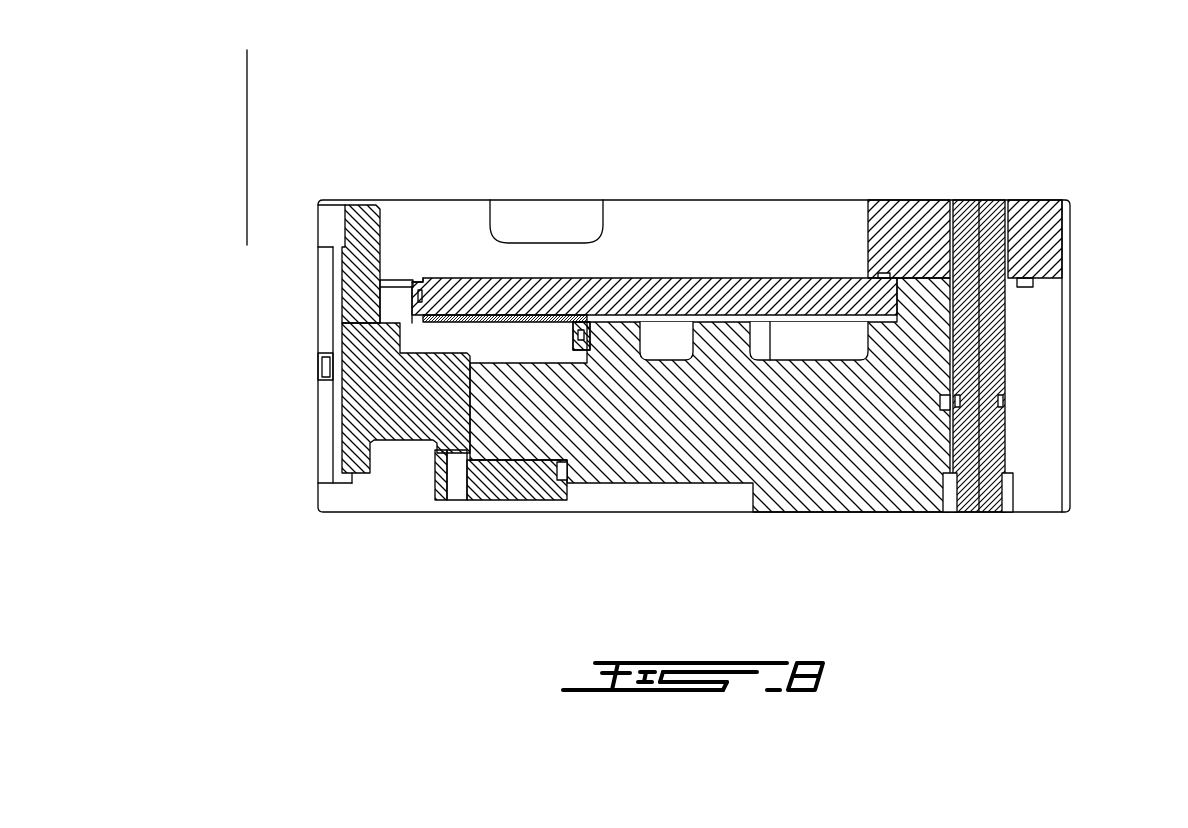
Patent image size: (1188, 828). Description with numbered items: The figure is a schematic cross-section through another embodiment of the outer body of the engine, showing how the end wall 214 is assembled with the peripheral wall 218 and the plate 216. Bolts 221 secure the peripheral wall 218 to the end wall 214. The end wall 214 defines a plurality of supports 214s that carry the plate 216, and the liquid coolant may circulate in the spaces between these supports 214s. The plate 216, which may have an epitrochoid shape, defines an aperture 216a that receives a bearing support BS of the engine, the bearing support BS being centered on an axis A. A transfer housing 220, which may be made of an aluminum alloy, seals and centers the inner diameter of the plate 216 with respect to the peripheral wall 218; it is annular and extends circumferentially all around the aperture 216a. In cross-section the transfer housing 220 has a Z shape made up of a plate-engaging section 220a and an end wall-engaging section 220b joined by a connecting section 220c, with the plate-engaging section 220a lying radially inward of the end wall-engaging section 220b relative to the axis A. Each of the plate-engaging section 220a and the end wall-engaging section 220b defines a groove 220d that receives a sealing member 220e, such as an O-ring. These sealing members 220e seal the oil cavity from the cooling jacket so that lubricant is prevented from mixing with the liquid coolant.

The axis A is at (247, 95).
The bearing support BS is at (359, 204).
The plate 216 is at (750, 278).
The aperture 216a is at (446, 277).
The transfer housing 220 is at (440, 332).
The plate-engaging section 220a is at (385, 318).
The end wall-engaging section 220b is at (565, 340).
The connecting section 220c is at (500, 340).
The groove 220d is at (588, 324).
The sealing member 220e is at (581, 336).
The end wall 214 is at (838, 420).
The support 214s is at (725, 352).
The bolt 221 is at (990, 240).
The peripheral wall 218 is at (1035, 247).